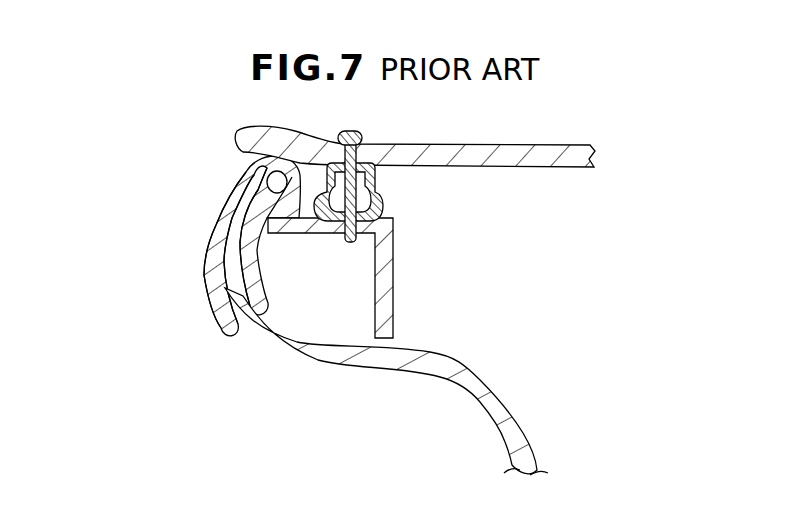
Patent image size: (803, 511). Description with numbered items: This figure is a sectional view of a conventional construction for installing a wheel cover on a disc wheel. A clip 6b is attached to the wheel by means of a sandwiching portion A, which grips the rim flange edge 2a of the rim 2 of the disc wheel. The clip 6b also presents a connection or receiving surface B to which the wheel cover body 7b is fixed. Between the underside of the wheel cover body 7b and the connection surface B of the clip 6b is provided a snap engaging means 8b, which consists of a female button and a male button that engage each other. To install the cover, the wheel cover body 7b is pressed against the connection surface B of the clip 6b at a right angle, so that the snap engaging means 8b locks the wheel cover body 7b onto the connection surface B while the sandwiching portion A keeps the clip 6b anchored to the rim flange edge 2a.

The wheel cover body 7b is at (508, 150).
The snap engaging means 8b is at (405, 185).
The connection surface B is at (400, 208).
The clip 6b is at (208, 194).
The rim flange edge 2a is at (245, 231).
The sandwiching portion A is at (243, 288).
The rim 2 is at (518, 367).